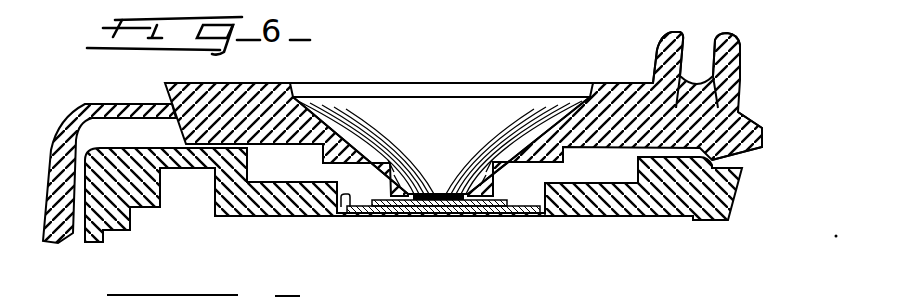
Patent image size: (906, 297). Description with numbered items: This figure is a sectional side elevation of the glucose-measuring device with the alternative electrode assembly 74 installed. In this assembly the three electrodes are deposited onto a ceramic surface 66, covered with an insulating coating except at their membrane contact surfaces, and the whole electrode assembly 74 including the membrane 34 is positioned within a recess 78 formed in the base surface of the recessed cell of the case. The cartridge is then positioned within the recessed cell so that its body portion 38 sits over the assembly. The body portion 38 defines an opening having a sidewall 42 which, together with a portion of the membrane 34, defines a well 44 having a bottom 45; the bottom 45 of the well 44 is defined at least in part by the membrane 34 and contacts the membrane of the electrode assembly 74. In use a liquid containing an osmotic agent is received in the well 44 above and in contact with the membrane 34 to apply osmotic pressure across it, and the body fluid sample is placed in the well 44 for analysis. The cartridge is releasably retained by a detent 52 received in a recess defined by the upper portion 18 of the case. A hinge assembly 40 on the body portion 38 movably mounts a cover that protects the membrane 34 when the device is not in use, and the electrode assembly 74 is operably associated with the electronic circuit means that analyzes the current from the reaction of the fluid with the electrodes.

The upper portion 18 is at (658, 208).
The membrane 34 is at (406, 205).
The body portion 38 is at (708, 125).
The hinge assembly 40 is at (743, 44).
The sidewall 42 is at (472, 148).
The well 44 is at (523, 135).
The bottom 45 is at (445, 208).
The detent 52 is at (718, 162).
The ceramic surface 66 is at (497, 212).
The electrode assembly 74 is at (530, 214).
The recess 78 is at (344, 212).